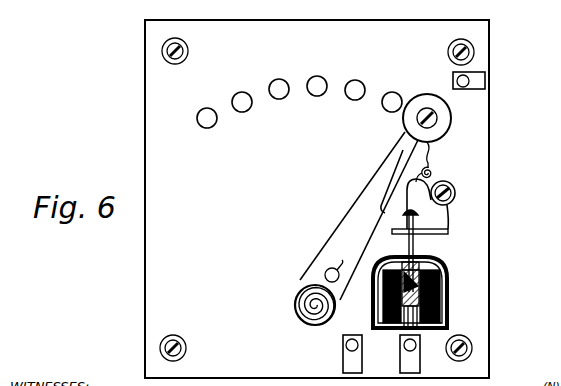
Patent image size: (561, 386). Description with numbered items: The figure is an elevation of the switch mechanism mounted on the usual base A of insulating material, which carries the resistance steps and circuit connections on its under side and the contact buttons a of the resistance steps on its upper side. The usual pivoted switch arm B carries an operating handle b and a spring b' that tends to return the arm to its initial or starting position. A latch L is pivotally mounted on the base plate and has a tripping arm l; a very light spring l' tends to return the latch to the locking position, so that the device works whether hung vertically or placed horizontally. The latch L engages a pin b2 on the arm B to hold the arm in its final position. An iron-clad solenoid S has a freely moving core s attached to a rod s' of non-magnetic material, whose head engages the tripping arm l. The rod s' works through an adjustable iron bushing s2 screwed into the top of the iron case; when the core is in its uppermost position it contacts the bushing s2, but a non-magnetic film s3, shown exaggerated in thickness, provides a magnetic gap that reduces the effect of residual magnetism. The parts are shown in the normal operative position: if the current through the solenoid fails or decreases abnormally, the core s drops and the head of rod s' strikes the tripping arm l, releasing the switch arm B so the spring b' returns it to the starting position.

The base A is at (317, 199).
The contact buttons a is at (244, 112).
The pivoted switch arm B is at (372, 204).
The operating handle b is at (441, 118).
The spring b' is at (302, 305).
The pin b2 is at (432, 171).
The latch L is at (449, 184).
The light spring l' is at (463, 204).
The tripping arm l is at (428, 212).
The iron-clad solenoid S is at (421, 296).
The core s is at (420, 327).
The rod s' is at (421, 251).
The adjustable iron bushing s2 is at (420, 258).
The non-magnetic film s3 is at (432, 271).